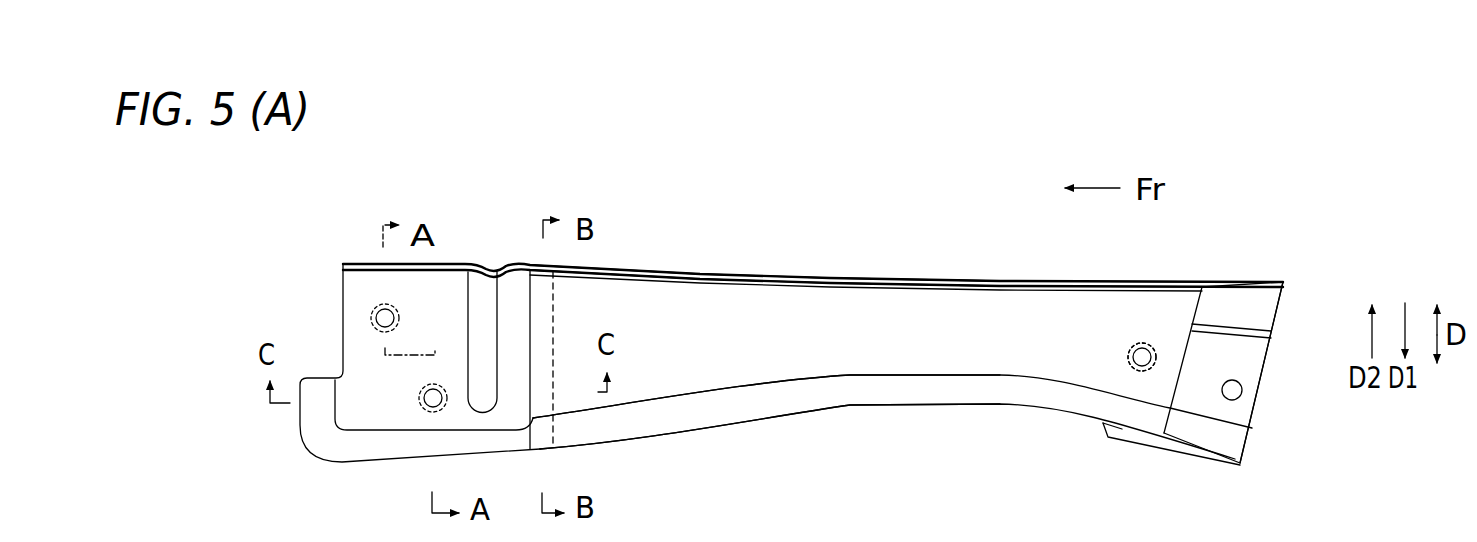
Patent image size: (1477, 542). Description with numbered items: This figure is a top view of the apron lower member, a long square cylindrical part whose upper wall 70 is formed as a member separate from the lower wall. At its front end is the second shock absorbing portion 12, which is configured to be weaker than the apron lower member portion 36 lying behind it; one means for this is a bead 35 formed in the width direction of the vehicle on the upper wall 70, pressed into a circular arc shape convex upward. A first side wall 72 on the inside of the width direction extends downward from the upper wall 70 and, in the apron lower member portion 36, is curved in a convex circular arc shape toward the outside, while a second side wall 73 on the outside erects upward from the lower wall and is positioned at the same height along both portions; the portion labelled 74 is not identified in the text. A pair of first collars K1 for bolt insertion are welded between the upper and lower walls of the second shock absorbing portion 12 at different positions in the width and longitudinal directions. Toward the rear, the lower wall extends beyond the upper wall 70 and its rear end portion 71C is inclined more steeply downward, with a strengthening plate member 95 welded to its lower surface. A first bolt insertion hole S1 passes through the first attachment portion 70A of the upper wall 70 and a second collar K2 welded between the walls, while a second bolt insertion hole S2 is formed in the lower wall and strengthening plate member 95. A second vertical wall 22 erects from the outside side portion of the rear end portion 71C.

The second shock absorbing portion 12 is at (468, 210).
The second vertical wall 22 is at (1258, 280).
The bead 35 is at (493, 318).
The apron lower member portion 36 is at (1012, 270).
The upper wall 70 is at (874, 310).
The first attachment portion 70A is at (1157, 328).
The rear end portion 71C is at (1245, 357).
The first side wall 72 is at (748, 387).
The second side wall 73 is at (803, 277).
The lower wall 74 is at (862, 393).
The strengthening plate member 95 is at (1190, 448).
The first collar K1 is at (369, 310).
The second collar K2 is at (1140, 371).
The first bolt insertion hole S1 is at (1135, 356).
The second bolt insertion hole S2 is at (1243, 396).